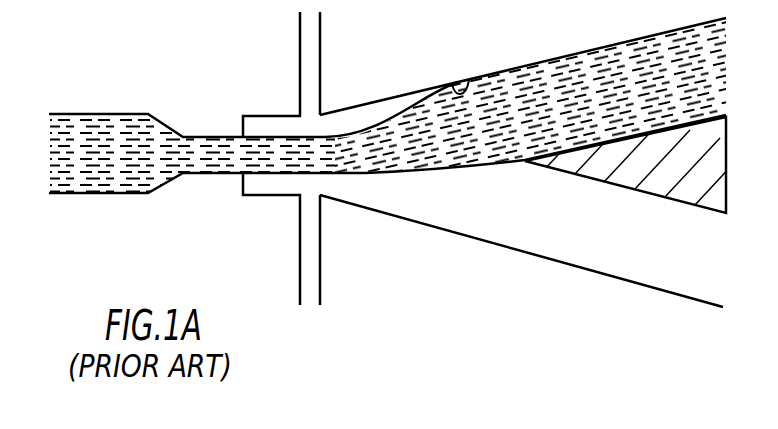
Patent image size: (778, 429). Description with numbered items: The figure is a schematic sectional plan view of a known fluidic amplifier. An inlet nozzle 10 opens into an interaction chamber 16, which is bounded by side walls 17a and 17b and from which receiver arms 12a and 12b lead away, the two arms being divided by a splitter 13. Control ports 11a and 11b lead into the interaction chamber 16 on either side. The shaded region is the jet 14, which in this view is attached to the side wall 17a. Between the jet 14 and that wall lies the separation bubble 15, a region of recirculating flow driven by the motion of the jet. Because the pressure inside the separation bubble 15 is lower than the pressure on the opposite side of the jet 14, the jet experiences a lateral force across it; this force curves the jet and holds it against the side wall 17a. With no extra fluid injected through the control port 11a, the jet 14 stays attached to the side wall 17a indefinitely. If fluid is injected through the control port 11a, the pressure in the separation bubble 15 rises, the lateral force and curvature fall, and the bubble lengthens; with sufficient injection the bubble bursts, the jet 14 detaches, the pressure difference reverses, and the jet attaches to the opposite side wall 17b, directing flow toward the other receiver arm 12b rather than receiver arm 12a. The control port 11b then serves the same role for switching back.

The inlet nozzle 10 is at (178, 155).
The control port 11a is at (308, 110).
The control port 11b is at (310, 198).
The receiver arm 12a is at (503, 127).
The receiver arm 12b is at (543, 228).
The splitter 13 is at (671, 175).
The jet 14 is at (390, 158).
The separation bubble 15 is at (355, 117).
The interaction chamber 16 is at (315, 160).
The side wall 17a is at (470, 90).
The side wall 17b is at (472, 230).